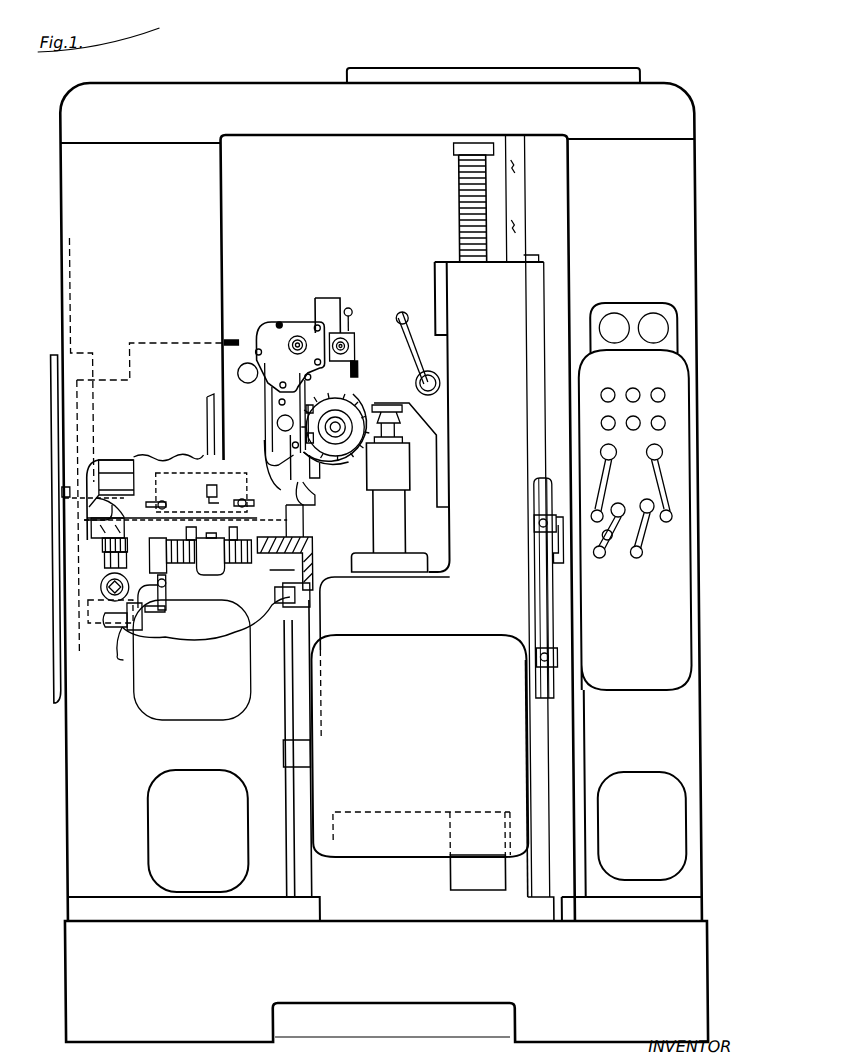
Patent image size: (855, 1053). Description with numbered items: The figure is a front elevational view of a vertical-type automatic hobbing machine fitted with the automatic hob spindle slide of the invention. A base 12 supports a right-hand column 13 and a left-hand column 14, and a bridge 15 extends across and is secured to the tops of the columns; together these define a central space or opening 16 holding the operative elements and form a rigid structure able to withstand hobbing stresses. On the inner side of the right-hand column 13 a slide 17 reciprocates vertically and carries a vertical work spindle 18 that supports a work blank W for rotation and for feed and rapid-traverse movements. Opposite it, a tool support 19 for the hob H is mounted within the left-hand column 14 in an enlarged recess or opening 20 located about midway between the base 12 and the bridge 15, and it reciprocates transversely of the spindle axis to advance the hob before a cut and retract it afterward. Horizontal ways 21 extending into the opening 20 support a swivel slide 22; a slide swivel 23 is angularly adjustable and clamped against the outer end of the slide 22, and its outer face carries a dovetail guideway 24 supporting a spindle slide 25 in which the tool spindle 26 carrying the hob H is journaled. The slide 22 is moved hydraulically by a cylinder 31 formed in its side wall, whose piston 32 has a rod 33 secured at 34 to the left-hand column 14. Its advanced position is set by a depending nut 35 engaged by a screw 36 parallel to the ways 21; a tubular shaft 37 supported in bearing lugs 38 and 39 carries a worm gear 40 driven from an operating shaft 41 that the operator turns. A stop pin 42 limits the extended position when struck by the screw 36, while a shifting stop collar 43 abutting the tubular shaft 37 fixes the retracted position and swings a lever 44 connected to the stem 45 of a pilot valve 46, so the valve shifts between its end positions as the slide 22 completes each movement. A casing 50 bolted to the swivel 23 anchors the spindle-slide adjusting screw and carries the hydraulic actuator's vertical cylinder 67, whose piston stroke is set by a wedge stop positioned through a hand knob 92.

The base 12 is at (67, 960).
The right-hand column 13 is at (671, 727).
The left-hand column 14 is at (71, 821).
The bridge 15 is at (270, 98).
The central space or opening 16 is at (305, 155).
The slide 17 is at (498, 285).
The vertical work spindle 18 is at (389, 527).
The tool support 19 is at (236, 338).
The enlarged recess or opening 20 is at (112, 478).
The ways 21 is at (295, 530).
The swivel slide 22 is at (64, 527).
The slide swivel 23 is at (305, 497).
The dovetail guideway 24 is at (290, 455).
The spindle slide 25 is at (321, 462).
The tool spindle 26 is at (343, 425).
The cylinder 31 is at (164, 478).
The piston 32 is at (184, 480).
The rod 33 is at (64, 506).
The securing point 34 is at (62, 490).
The depending nut 35 is at (214, 570).
The screw 36 is at (240, 565).
The tubular shaft 37 is at (96, 583).
The bearing lug 38 is at (84, 565).
The bearing lug 39 is at (142, 540).
The worm gear 40 is at (82, 550).
The operating shaft 41 is at (102, 590).
The stop pin 42 is at (266, 572).
The shifting stop collar 43 is at (169, 577).
The lever 44 is at (164, 598).
The stem 45 is at (144, 628).
The pilot valve 46 is at (124, 636).
The casing 50 is at (272, 400).
The vertical cylinder 67 is at (333, 312).
The hand knob 92 is at (352, 325).
The hob H is at (352, 407).
The work blank W is at (396, 462).